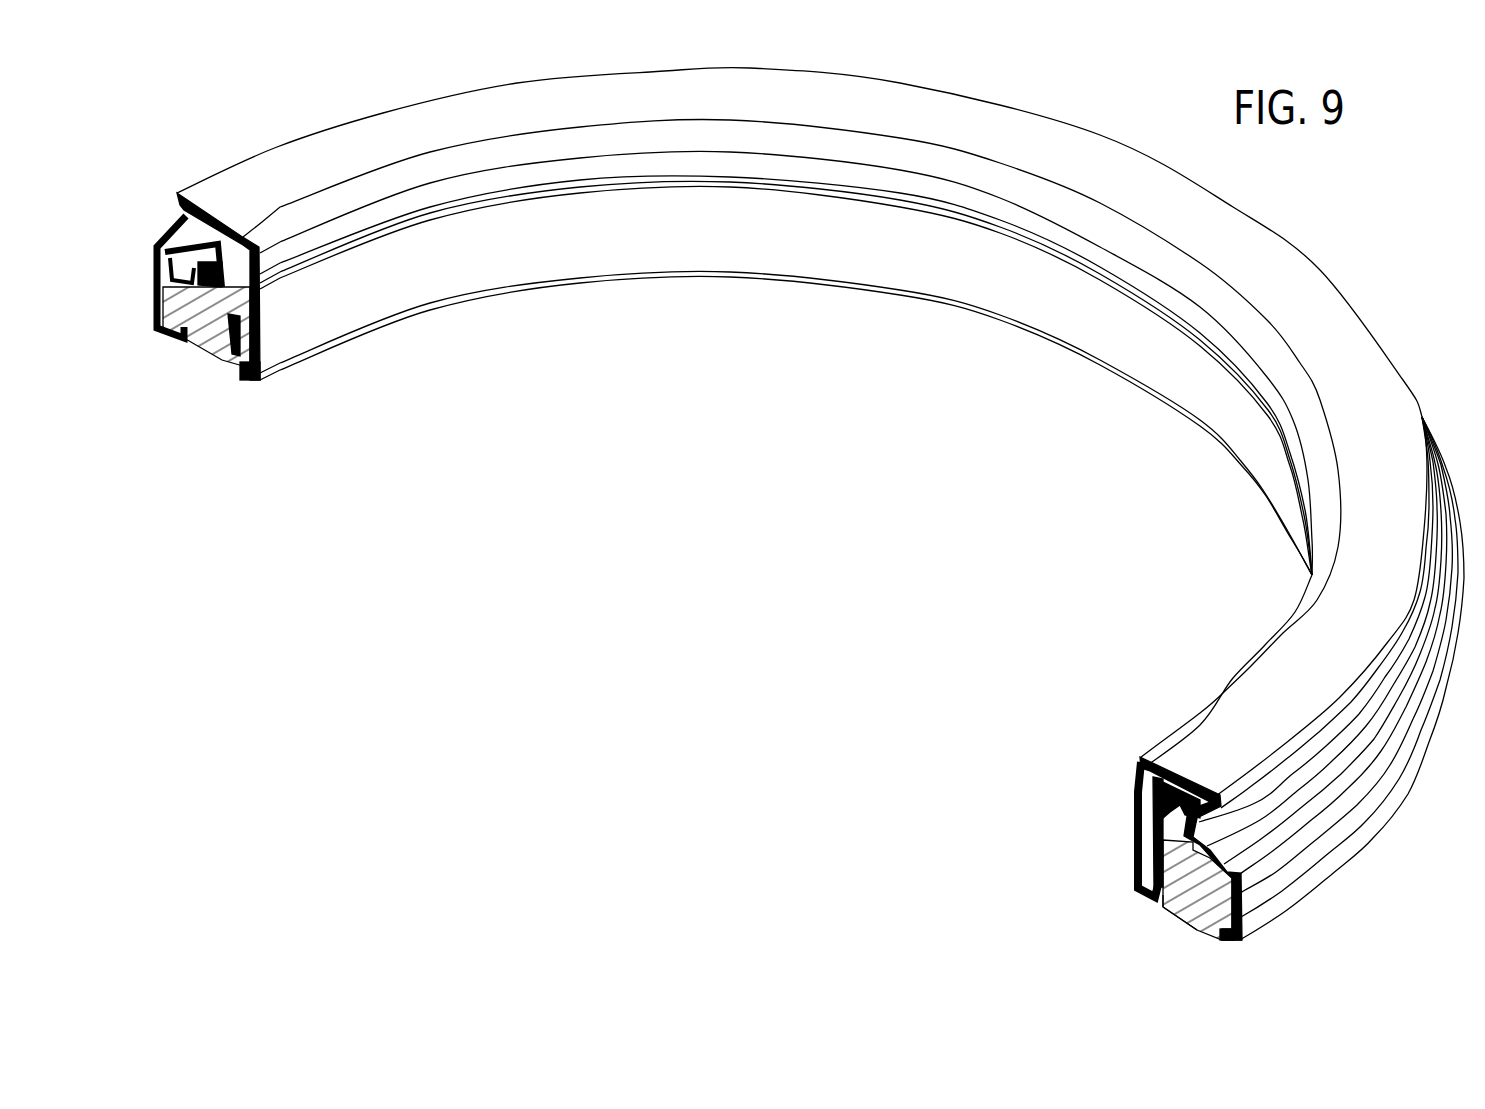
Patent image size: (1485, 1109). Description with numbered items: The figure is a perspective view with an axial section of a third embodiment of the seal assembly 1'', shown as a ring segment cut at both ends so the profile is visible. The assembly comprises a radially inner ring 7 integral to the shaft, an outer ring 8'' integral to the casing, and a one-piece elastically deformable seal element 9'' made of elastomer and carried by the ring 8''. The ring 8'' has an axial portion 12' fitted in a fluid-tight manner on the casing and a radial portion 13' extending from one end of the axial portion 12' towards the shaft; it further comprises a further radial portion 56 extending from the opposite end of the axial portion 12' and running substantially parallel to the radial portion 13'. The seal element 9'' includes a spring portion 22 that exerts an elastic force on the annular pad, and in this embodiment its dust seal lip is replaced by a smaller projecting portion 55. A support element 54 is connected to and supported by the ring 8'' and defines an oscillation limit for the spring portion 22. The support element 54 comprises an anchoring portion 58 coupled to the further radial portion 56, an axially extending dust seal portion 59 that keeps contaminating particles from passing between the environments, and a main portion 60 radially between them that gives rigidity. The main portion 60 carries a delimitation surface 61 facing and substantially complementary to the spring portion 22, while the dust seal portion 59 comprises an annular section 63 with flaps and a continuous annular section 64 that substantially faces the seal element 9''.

The seal assembly 1'' is at (782, 530).
The radially inner ring 7 is at (732, 256).
The ring 8'' is at (1331, 678).
The seal element 9'' is at (161, 253).
The axial portion 12' is at (1276, 940).
The radial portion 13' is at (1143, 893).
The spring portion 22 is at (1221, 826).
The support element 54 is at (203, 355).
The projecting portion 55 is at (245, 280).
The further radial portion 56 is at (1224, 933).
The anchoring portion 58 is at (1206, 903).
The dust seal portion 59 is at (1160, 793).
The main portion 60 is at (1172, 921).
The delimitation surface 61 is at (221, 275).
The annular section with flaps 63 is at (1142, 849).
The continuous annular section 64 is at (1142, 793).